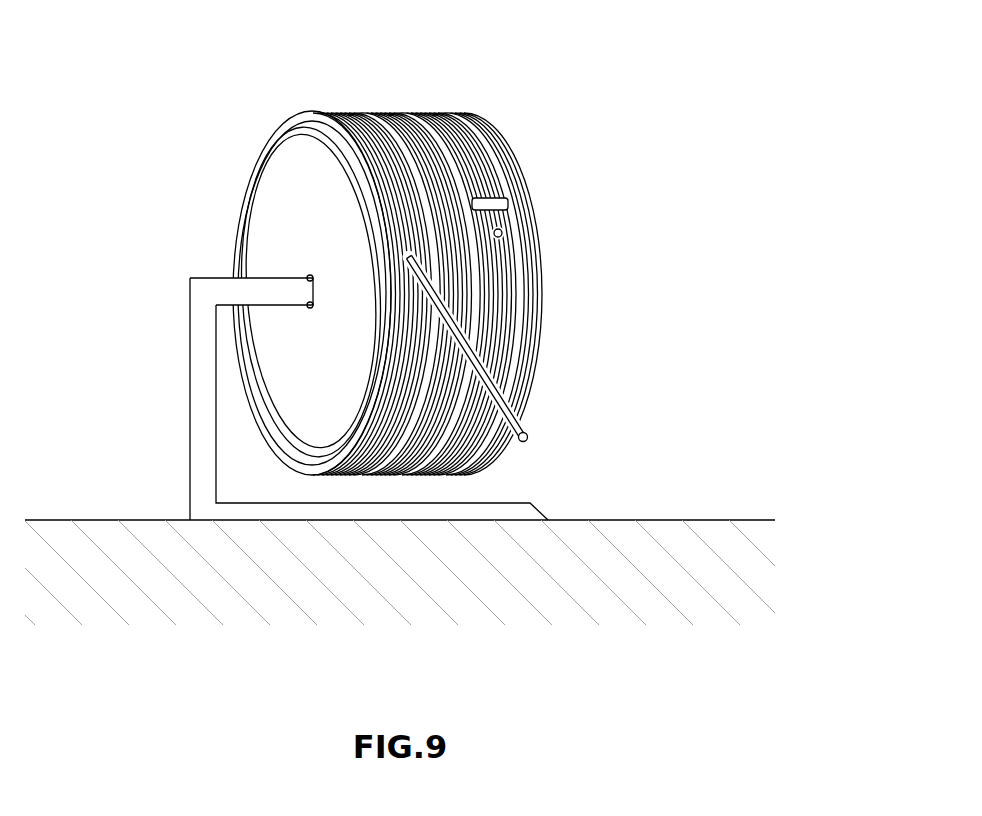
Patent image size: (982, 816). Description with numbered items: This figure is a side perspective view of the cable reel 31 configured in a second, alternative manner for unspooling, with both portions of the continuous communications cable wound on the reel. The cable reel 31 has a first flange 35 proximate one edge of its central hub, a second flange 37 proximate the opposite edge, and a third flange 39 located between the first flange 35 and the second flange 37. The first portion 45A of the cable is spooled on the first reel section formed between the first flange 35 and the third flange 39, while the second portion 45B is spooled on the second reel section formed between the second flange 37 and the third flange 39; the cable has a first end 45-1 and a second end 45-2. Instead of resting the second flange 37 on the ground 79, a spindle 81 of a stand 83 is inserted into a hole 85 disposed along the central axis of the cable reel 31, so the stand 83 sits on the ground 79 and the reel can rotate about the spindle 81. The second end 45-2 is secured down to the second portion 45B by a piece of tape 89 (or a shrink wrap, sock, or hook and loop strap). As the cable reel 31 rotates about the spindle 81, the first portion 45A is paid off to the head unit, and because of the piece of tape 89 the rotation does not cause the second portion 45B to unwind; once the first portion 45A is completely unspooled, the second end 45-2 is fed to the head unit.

The cable reel 31 is at (412, 246).
The first flange 35 is at (295, 159).
The second flange 37 is at (478, 112).
The third flange 39 is at (392, 112).
The first portion of the cable 45A is at (353, 113).
The second portion of the cable 45B is at (428, 112).
The first end of the cable 45-1 is at (528, 430).
The second end of the cable 45-2 is at (498, 228).
The ground 79 is at (389, 585).
The spindle 81 is at (272, 290).
The stand 83 is at (337, 370).
The hole 85 is at (311, 279).
The piece of tape 89 is at (498, 202).